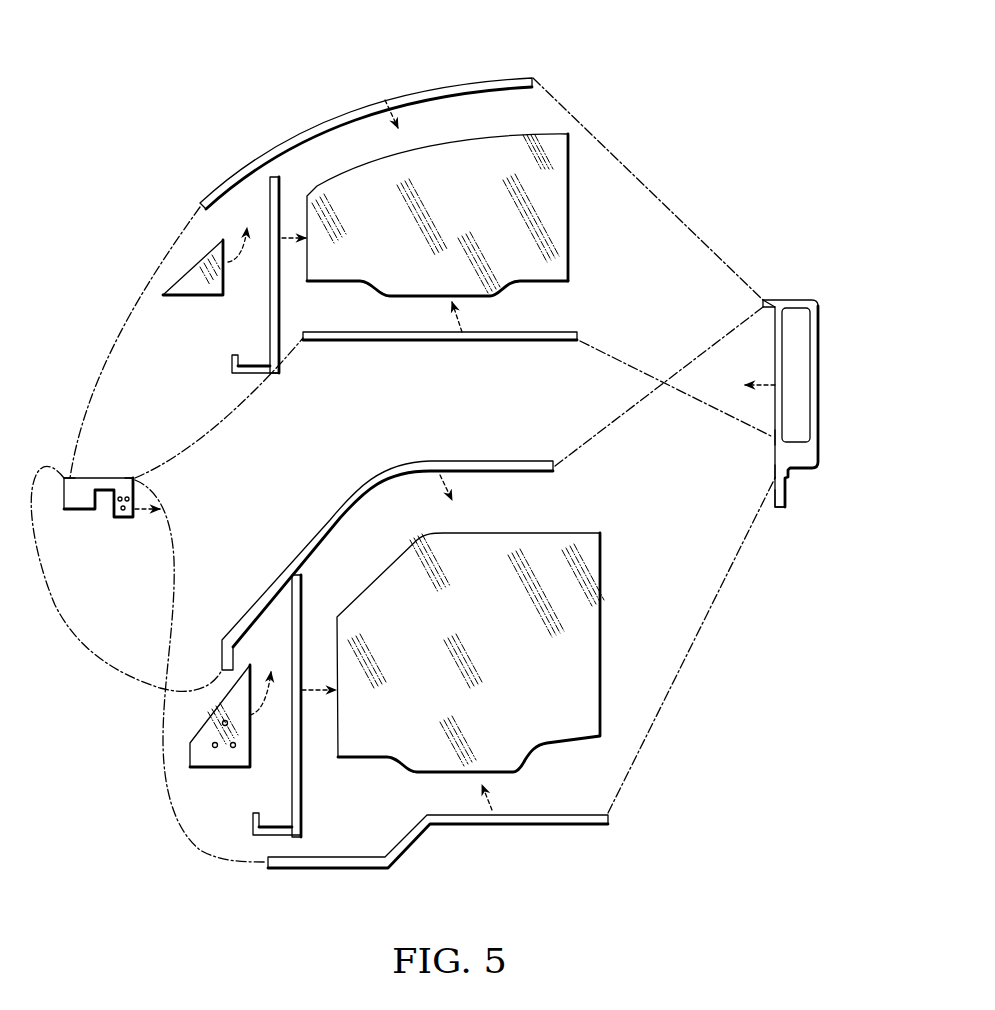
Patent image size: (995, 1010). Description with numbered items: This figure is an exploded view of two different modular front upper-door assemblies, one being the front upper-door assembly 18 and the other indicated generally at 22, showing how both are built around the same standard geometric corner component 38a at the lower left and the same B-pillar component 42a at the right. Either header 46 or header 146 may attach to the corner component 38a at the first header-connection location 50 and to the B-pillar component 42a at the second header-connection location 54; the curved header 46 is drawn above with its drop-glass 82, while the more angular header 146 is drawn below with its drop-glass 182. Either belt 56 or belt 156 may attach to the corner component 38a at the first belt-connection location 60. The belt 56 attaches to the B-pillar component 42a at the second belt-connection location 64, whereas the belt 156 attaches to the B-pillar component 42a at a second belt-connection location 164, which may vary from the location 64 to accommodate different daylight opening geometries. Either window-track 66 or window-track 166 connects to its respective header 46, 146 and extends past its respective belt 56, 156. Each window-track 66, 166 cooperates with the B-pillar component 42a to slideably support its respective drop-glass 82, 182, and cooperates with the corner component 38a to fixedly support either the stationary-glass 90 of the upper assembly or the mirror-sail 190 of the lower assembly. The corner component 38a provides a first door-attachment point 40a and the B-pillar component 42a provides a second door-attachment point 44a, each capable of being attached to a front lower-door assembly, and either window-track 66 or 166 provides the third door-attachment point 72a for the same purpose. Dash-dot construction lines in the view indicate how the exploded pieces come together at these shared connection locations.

The front upper-door assembly 18 is at (286, 78).
The door assembly 22 is at (675, 788).
The geometric corner component 38a is at (80, 485).
The first door-attachment point 40a is at (77, 508).
The B-pillar component 42a is at (792, 300).
The second door-attachment point 44a is at (782, 508).
The header 46 is at (355, 100).
The first header-connection location 50 is at (62, 476).
The second header-connection location 54 is at (760, 304).
The belt 56 is at (450, 342).
The first belt-connection location 60 is at (138, 479).
The second belt-connection location 64 is at (773, 438).
The window-track 66 is at (282, 322).
The third door-attachment point 72a is at (232, 362).
The drop-glass 82 is at (466, 220).
The stationary-glass 90 is at (205, 297).
The header 146 is at (453, 461).
The belt 156 is at (535, 824).
The second belt-connection location 164 is at (772, 470).
The window-track 166 is at (298, 780).
The drop-glass 182 is at (506, 655).
The mirror-sail 190 is at (190, 757).